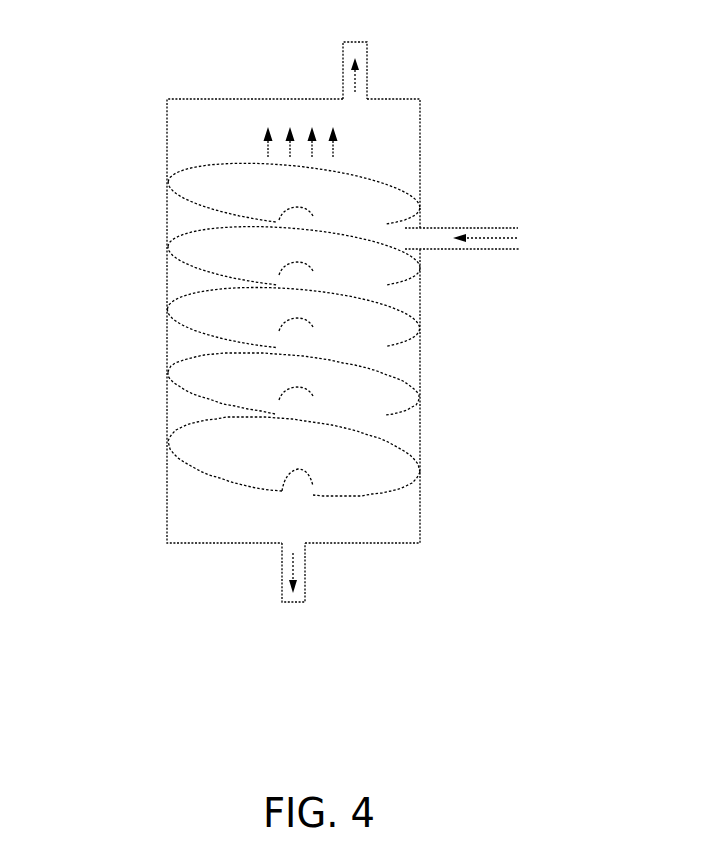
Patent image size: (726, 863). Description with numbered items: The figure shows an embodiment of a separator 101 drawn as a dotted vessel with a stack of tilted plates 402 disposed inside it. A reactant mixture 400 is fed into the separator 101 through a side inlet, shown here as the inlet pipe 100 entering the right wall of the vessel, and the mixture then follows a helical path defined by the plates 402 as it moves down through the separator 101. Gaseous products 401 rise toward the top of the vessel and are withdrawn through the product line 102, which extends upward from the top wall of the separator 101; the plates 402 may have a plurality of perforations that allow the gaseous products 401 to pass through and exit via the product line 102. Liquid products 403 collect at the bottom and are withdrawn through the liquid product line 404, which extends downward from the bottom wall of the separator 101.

The inlet pipe 100 is at (430, 228).
The separator 101 is at (167, 267).
The product line 102 is at (367, 50).
The reactant mixture 400 is at (483, 238).
The gaseous products 401 is at (343, 70).
The plates 402 is at (383, 392).
The liquid products 403 is at (285, 573).
The liquid product line 404 is at (305, 568).